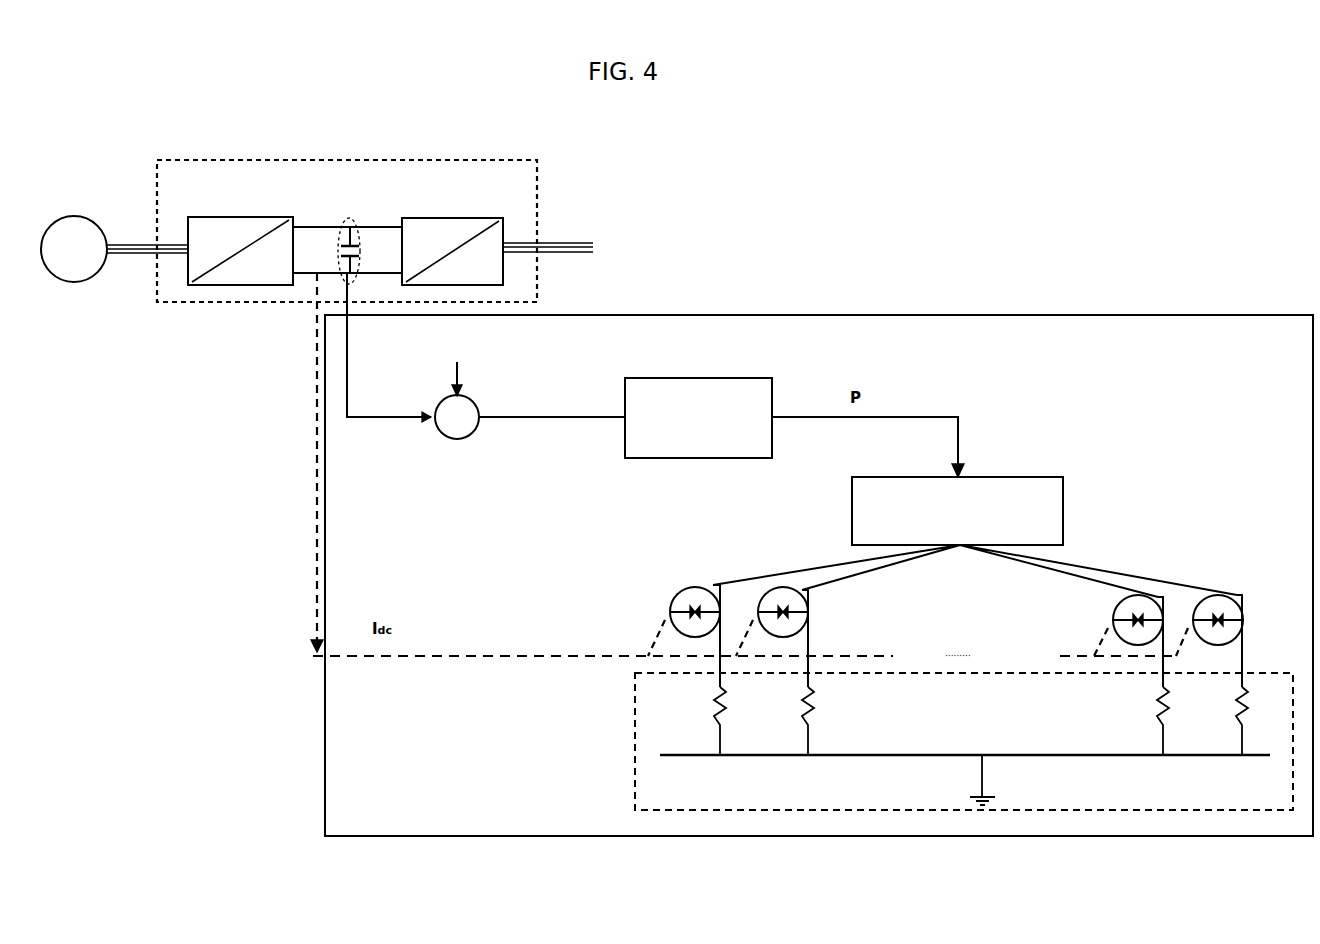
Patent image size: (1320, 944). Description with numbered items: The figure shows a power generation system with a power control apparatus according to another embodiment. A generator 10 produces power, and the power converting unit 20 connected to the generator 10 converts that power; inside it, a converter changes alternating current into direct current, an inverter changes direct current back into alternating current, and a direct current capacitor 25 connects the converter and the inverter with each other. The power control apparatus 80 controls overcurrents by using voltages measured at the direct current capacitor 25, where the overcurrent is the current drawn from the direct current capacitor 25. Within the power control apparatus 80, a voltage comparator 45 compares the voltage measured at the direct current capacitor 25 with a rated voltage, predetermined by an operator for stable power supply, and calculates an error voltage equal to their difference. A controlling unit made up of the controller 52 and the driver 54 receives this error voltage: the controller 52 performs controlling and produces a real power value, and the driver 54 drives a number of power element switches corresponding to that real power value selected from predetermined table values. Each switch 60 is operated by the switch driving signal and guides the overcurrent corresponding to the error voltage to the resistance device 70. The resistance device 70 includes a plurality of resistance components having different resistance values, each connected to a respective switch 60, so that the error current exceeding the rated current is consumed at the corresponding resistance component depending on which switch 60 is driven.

The generator 10 is at (68, 216).
The power converting unit 20 is at (538, 174).
The direct current capacitor 25 is at (342, 225).
The voltage comparator 45 is at (447, 440).
The controller 52 is at (703, 378).
The driver 54 is at (1012, 478).
The switch 60 is at (693, 587).
The resistance device 70 is at (635, 760).
The power control apparatus 80 is at (901, 316).